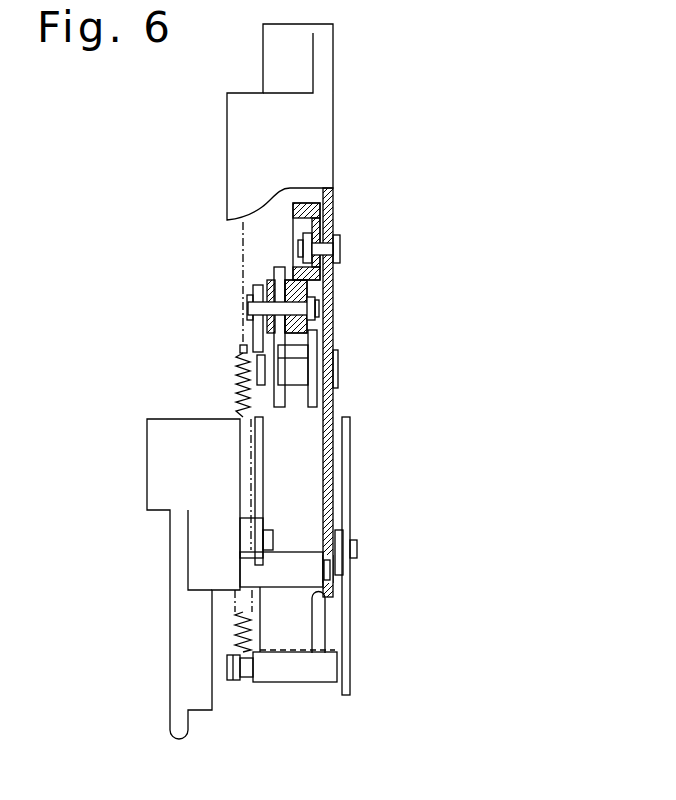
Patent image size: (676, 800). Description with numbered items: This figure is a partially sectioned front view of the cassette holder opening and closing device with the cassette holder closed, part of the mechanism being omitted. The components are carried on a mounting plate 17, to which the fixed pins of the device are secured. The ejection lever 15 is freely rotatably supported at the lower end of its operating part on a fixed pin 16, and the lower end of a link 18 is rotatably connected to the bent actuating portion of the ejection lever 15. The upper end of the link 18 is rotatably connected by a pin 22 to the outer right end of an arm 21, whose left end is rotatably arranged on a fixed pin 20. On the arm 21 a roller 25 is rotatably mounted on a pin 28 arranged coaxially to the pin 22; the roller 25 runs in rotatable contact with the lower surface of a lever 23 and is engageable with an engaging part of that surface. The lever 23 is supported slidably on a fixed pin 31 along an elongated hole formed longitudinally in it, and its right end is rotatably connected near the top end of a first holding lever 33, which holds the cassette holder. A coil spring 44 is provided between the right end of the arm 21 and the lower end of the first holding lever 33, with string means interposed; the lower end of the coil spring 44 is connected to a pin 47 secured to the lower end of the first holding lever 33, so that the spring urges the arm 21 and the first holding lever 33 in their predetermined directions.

The mounting plate 17 is at (315, 130).
The lever 23 is at (317, 208).
The fixed pin 31 is at (336, 247).
The arm 21 is at (266, 283).
The pin 22 is at (250, 307).
The link 18 is at (253, 334).
The pin 28 is at (325, 307).
The roller 25 is at (312, 327).
The fixed pin 20 is at (302, 367).
The ejection lever 15 is at (163, 457).
The fixed pin 16 is at (298, 562).
The first holding lever 33 is at (345, 593).
The coil spring 44 is at (237, 628).
The pin 47 is at (292, 672).